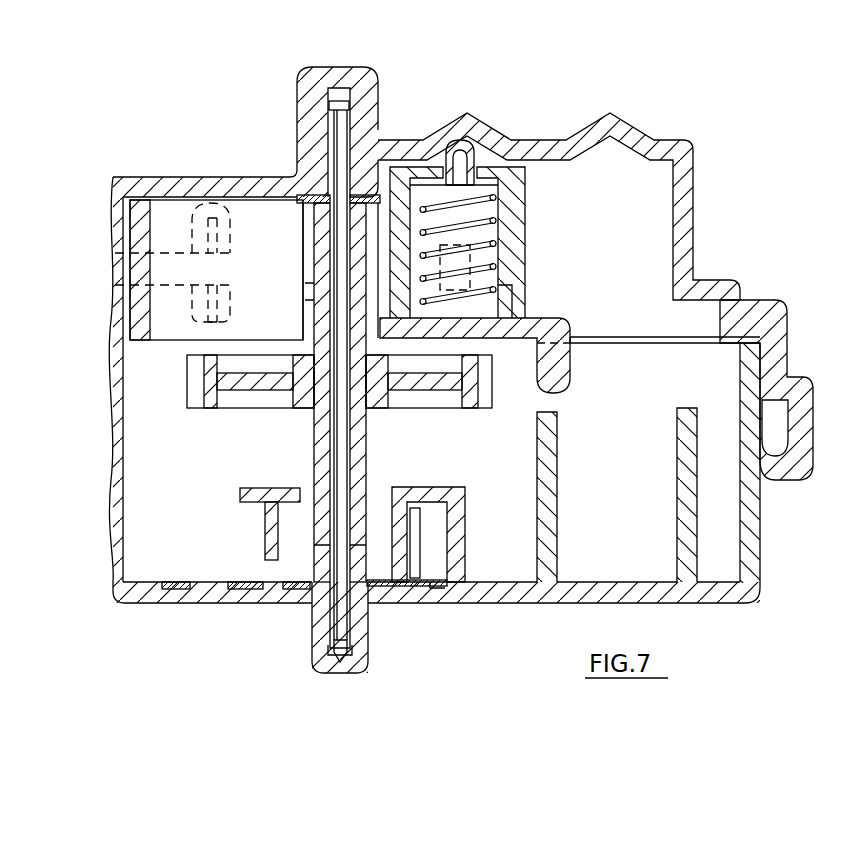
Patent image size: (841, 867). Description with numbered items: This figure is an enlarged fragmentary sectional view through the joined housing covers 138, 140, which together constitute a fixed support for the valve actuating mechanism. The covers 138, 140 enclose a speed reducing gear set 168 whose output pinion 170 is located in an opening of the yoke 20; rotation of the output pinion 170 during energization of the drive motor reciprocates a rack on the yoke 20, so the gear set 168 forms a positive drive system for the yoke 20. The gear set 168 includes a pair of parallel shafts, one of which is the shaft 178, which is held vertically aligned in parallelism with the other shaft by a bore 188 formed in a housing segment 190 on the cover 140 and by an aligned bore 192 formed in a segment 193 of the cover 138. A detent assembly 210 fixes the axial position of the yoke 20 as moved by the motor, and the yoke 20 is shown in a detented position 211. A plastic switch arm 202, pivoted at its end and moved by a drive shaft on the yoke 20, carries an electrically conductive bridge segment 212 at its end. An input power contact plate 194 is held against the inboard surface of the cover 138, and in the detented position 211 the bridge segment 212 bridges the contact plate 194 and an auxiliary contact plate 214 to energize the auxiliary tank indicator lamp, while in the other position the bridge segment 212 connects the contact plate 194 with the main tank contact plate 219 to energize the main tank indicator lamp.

The yoke 20 is at (142, 176).
The bore 188 is at (333, 118).
The housing segment 190 is at (366, 105).
The detented position 211 is at (480, 166).
The detent assembly 210 is at (505, 243).
The housing cover 140 is at (758, 320).
The housing cover 138 is at (752, 545).
The output pinion 170 is at (312, 284).
The shaft 178 is at (340, 450).
The speed reducing gear set 168 is at (458, 410).
The switch arm 202 is at (268, 494).
The auxiliary contact plate 214 is at (188, 592).
The input power contact plate 194 is at (260, 592).
The main tank contact plate 219 is at (300, 600).
The bridge segment 212 is at (446, 588).
The segment 193 is at (362, 606).
The bore 192 is at (357, 663).